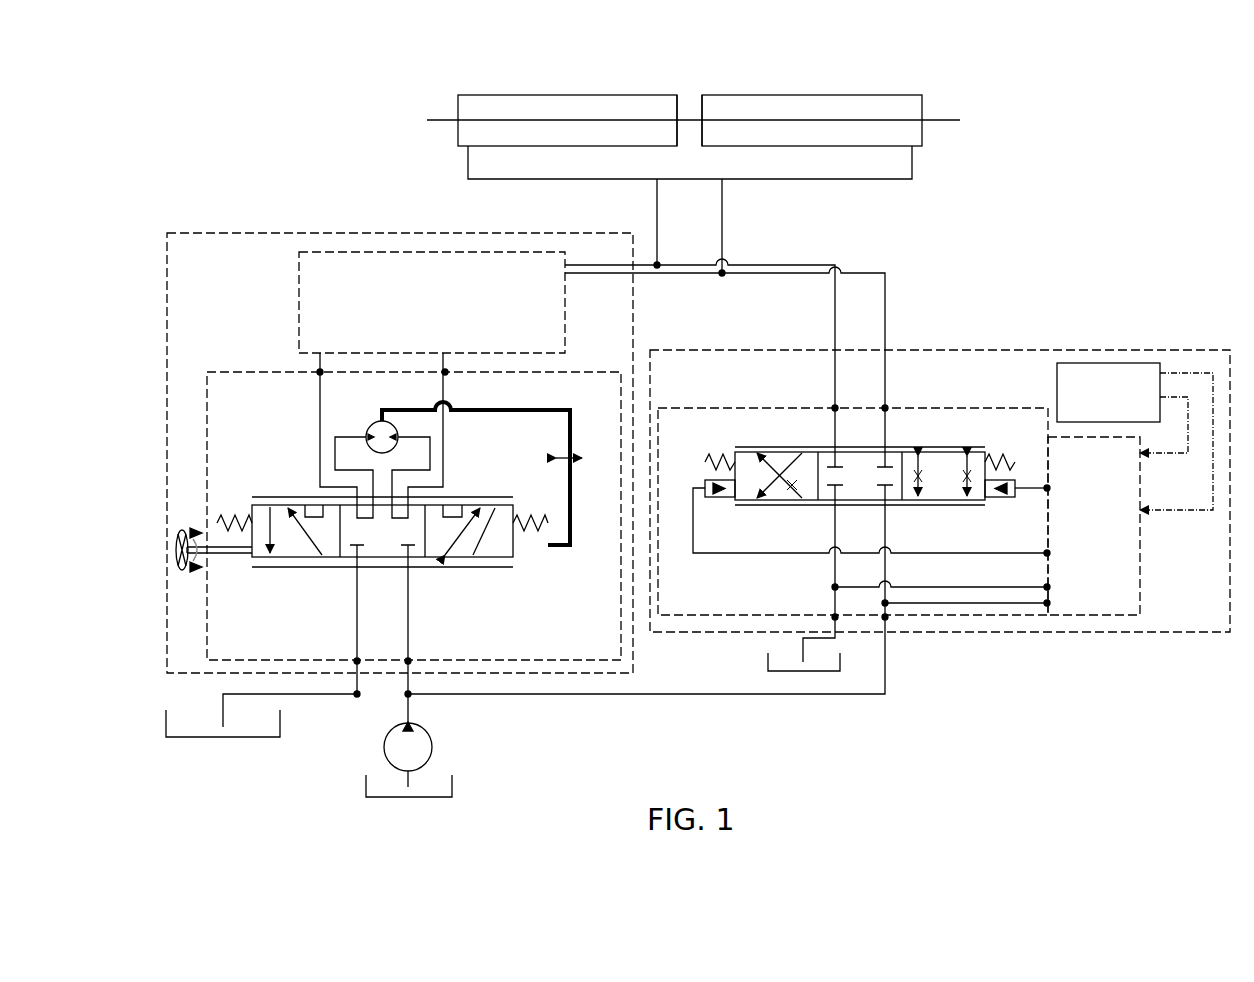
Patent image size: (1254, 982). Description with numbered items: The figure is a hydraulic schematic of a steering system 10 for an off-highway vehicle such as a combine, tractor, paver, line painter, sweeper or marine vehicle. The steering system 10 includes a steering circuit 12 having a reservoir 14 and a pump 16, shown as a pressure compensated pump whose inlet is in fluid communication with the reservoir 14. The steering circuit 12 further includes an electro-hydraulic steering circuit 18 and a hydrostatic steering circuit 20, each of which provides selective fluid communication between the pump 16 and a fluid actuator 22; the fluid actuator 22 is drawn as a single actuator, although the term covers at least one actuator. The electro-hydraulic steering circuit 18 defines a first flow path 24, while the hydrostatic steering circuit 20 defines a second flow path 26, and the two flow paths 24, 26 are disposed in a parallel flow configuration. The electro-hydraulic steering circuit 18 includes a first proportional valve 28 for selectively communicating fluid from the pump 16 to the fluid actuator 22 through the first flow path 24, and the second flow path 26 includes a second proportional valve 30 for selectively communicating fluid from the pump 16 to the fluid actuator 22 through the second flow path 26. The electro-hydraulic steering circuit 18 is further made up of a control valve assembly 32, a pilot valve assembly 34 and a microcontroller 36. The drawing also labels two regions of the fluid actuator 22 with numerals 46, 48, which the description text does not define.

The steering system 10 is at (230, 179).
The steering circuit 12 is at (1044, 283).
The reservoir 14 is at (264, 738).
The pump 16 is at (433, 743).
The electro-hydraulic steering circuit 18 is at (1060, 632).
The hydrostatic steering circuit 20 is at (368, 232).
The fluid actuator 22 is at (722, 92).
The first flow path 24 is at (908, 518).
The second flow path 26 is at (418, 583).
The first proportional valve 28 is at (938, 450).
The second proportional valve 30 is at (288, 508).
The control valve assembly 32 is at (980, 617).
The pilot valve assembly 34 is at (1143, 575).
The microcontroller 36 is at (1117, 362).
The first cylinder chamber 46 is at (466, 94).
The second cylinder chamber 48 is at (916, 94).